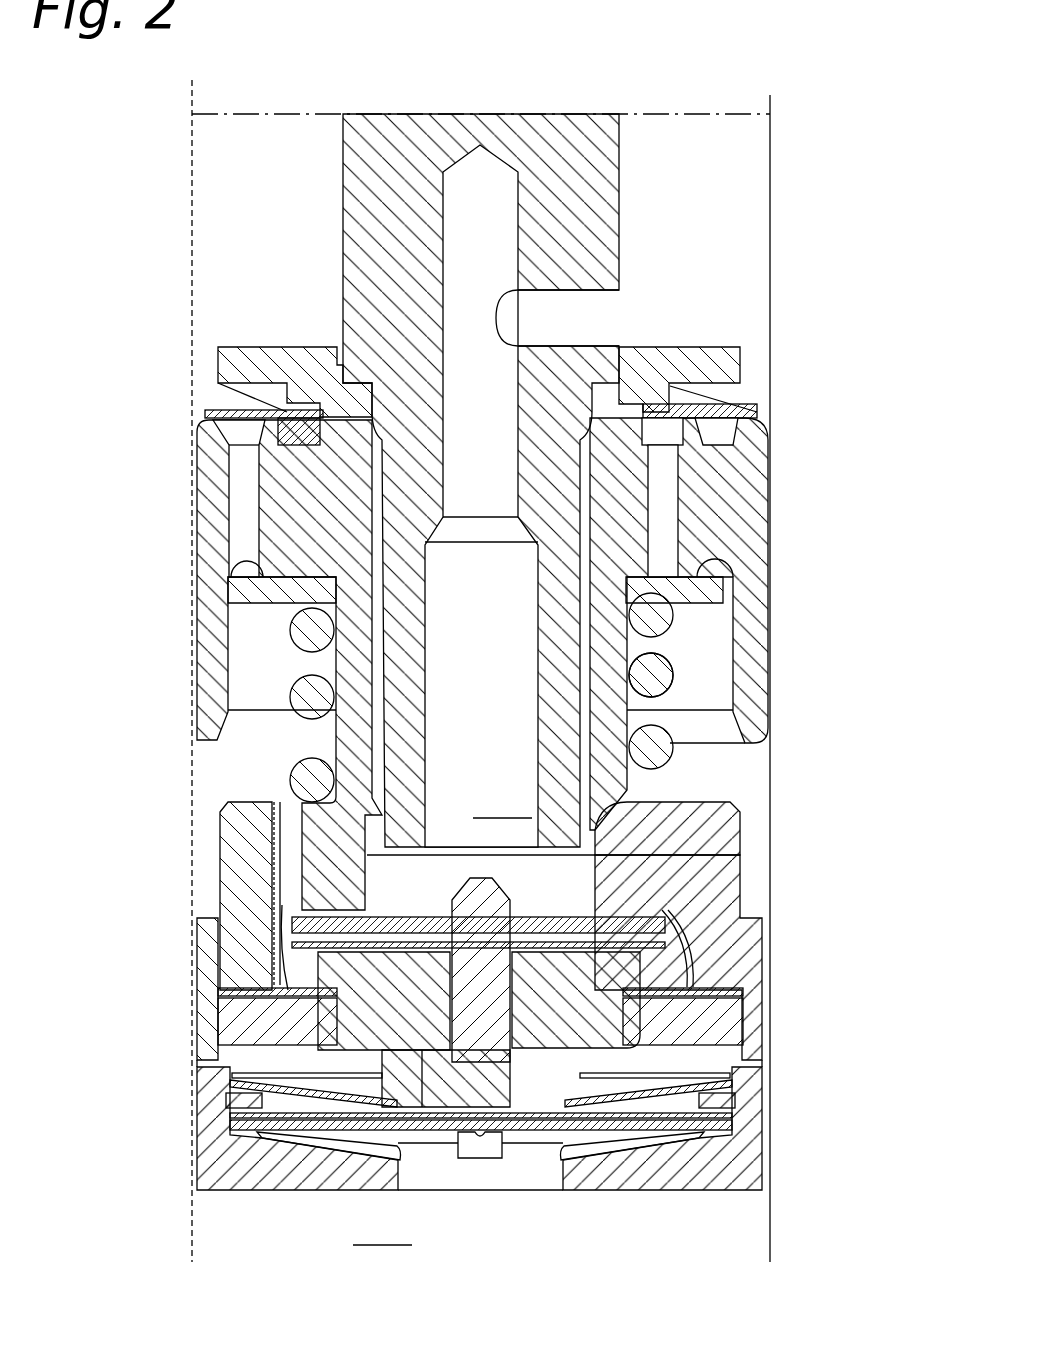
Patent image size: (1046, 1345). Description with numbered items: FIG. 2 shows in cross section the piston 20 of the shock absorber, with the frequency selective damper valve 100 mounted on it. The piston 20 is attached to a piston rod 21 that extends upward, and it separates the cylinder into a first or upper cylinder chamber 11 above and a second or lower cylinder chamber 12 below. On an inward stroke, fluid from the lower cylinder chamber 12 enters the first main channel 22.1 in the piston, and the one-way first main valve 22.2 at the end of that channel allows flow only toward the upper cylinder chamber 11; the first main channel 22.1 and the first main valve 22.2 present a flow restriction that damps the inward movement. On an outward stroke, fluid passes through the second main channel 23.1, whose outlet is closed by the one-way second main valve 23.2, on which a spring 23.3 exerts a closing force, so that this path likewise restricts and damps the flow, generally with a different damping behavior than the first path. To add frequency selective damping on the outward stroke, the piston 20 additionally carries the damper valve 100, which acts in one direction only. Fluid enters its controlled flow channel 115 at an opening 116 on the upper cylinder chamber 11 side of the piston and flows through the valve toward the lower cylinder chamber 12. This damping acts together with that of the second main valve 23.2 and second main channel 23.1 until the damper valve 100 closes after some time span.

The first or upper cylinder chamber 11 is at (705, 222).
The second or lower cylinder chamber 12 is at (705, 1230).
The piston 20 is at (483, 668).
The piston rod 21 is at (473, 427).
The first main channel 22.1 is at (243, 512).
The first main valve 22.2 is at (215, 412).
The second main channel 23.1 is at (663, 508).
The second main valve 23.2 is at (705, 592).
The spring 23.3 is at (667, 674).
The frequency selective damper valve 100 is at (765, 965).
The controlled flow channel 115 is at (453, 658).
The opening 116 is at (590, 328).